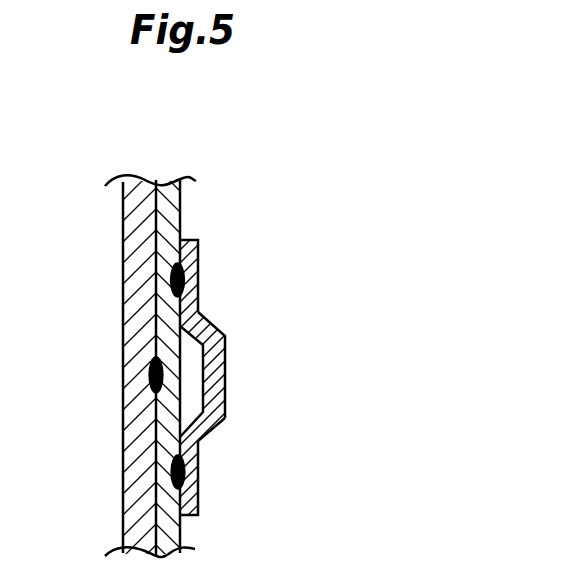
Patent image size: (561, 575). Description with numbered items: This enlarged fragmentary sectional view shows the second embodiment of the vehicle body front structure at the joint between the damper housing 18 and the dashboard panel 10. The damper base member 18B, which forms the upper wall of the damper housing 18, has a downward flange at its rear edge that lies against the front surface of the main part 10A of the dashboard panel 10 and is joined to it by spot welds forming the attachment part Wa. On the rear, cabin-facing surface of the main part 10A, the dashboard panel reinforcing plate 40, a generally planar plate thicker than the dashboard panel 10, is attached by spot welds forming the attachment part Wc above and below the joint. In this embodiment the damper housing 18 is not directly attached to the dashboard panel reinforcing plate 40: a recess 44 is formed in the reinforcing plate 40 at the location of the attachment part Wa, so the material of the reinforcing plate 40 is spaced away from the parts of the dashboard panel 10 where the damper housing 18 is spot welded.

The damper housing 18 is at (127, 212).
The damper base member 18B is at (127, 295).
The dashboard panel 10 is at (150, 512).
The main part 10A is at (162, 423).
The attachment part Wa is at (151, 379).
The dashboard panel reinforcing plate 40 is at (201, 293).
The recess 44 is at (220, 374).
The attachment part Wc is at (185, 277).